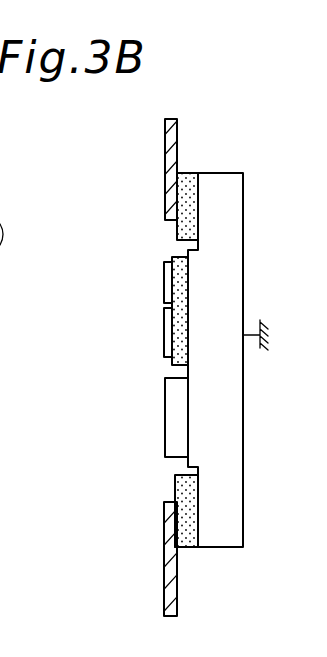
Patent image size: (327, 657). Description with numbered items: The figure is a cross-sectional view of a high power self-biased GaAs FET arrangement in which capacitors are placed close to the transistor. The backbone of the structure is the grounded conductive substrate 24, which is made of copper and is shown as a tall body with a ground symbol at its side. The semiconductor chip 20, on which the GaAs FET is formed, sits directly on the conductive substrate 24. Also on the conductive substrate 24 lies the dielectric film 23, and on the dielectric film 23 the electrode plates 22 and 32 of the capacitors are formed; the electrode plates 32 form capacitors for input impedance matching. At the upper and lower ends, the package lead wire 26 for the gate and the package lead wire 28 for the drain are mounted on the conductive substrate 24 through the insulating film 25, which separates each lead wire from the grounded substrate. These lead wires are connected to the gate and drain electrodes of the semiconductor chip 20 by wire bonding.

The semiconductor chip 20 is at (167, 398).
The electrode plate 22 is at (164, 275).
The dielectric film 23 is at (180, 258).
The conductive substrate 24 is at (238, 258).
The insulating film 25 is at (186, 176).
The package lead wire for the gate 26 is at (165, 130).
The package lead wire for the drain 28 is at (168, 515).
The electrode plate 32 is at (164, 330).